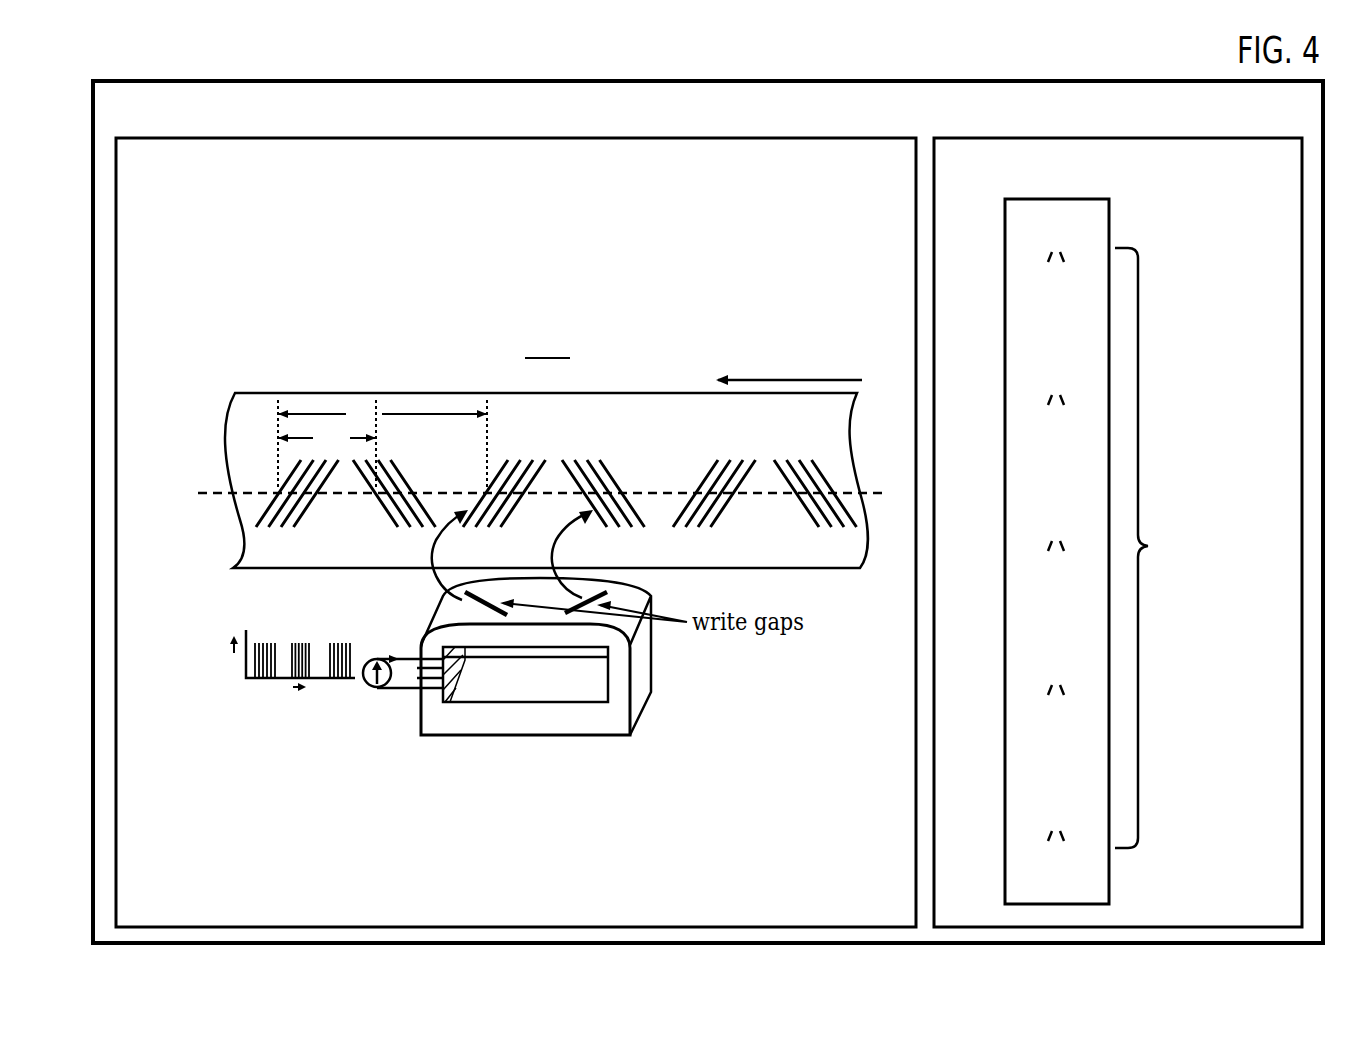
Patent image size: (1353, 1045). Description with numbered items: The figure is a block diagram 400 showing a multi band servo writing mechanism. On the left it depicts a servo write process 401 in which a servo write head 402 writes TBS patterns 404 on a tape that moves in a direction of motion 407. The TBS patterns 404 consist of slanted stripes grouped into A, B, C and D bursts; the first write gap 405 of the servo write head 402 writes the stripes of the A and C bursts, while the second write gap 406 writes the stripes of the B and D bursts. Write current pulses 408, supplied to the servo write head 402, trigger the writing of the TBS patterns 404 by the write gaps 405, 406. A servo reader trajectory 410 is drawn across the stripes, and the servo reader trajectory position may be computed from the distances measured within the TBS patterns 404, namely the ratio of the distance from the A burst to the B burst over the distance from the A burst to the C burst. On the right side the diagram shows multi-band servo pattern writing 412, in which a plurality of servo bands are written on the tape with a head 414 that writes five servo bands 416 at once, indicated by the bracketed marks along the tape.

The block diagram 400 is at (133, 81).
The servo write process 401 is at (527, 138).
The servo write head 402 is at (618, 721).
The TBS patterns 404 is at (548, 418).
The first write gap 405 is at (452, 600).
The second write gap 406 is at (653, 597).
The direction of motion 407 is at (760, 343).
The write current pulses 408 is at (295, 730).
The servo reader trajectory 410 is at (215, 485).
The multi-band servo pattern writing 412 is at (1118, 138).
The head 414 is at (1110, 227).
The five servo bands 416 is at (1212, 506).